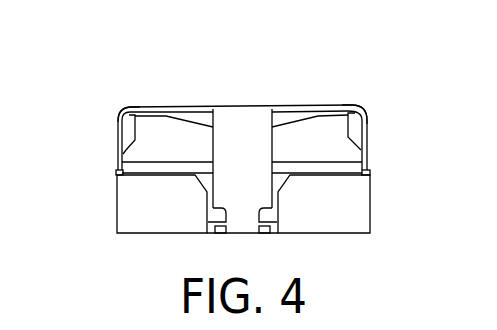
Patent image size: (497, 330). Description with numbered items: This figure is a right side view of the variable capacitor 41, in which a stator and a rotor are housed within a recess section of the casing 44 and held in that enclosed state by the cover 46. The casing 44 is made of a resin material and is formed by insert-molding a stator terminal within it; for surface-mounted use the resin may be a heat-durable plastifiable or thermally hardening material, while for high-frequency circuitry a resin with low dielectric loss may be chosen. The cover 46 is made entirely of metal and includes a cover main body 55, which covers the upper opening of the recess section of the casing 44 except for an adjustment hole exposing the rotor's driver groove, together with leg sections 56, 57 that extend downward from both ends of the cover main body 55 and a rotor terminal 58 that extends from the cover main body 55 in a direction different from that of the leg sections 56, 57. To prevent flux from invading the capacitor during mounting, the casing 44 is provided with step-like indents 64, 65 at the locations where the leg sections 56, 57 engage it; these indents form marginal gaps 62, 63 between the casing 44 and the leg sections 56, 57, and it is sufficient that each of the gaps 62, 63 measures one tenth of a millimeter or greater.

The variable capacitor 41 is at (103, 92).
The casing 44 is at (116, 212).
The cover 46 is at (309, 104).
The cover main body 55 is at (180, 107).
The leg section 56 is at (118, 156).
The leg section 57 is at (371, 155).
The rotor terminal 58 is at (243, 210).
The gap 62 is at (124, 108).
The gap 63 is at (357, 106).
The step-like indent 64 is at (128, 138).
The step-like indent 65 is at (358, 142).